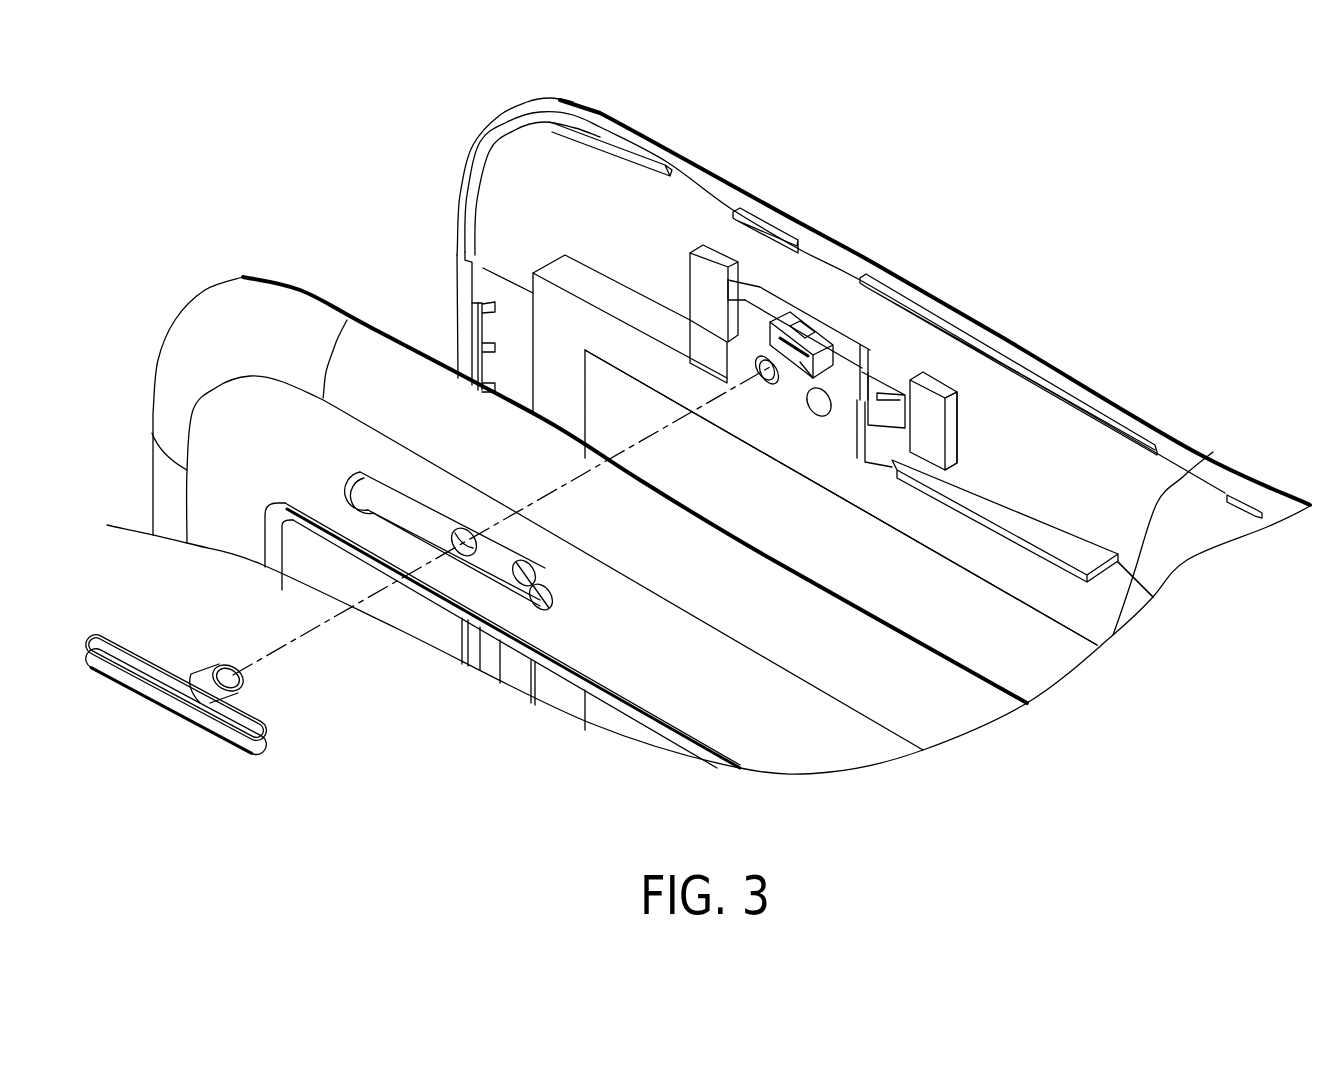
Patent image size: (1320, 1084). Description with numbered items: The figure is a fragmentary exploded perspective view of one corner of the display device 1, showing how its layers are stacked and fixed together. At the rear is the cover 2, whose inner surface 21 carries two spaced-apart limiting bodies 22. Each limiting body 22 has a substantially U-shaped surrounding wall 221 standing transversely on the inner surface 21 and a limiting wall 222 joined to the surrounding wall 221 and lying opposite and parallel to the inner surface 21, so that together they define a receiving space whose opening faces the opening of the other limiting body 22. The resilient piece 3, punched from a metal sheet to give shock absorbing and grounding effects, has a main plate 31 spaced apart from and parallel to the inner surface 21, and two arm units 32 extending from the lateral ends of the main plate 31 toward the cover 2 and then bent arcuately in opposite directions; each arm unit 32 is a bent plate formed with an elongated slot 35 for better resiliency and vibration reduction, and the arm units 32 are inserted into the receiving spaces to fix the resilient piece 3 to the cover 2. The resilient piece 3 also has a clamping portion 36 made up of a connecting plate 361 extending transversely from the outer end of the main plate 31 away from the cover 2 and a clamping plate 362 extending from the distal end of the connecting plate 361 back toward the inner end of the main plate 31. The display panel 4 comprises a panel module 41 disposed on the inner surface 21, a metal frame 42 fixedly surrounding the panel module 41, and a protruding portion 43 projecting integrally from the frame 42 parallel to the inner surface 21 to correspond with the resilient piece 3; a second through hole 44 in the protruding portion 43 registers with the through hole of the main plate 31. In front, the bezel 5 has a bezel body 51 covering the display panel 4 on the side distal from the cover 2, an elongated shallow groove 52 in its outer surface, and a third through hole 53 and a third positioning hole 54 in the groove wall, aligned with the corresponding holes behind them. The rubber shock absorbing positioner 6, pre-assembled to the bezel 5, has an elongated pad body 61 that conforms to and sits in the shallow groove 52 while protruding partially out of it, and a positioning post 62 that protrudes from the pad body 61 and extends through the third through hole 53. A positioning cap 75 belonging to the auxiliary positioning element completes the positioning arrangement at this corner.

The display device 1 is at (1190, 238).
The cover 2 is at (1193, 433).
The inner surface 21 is at (1160, 508).
The limiting bodies 22 is at (707, 275).
The surrounding wall 221 is at (953, 423).
The limiting wall 222 is at (927, 433).
The resilient piece 3 is at (838, 330).
The main plate 31 is at (862, 365).
The arm units 32 is at (735, 325).
The elongated slot 35 is at (905, 378).
The clamping portion 36 is at (793, 373).
The connecting plate 361 is at (797, 323).
The clamping plate 362 is at (800, 362).
The display panel 4 is at (540, 253).
The panel module 41 is at (1030, 657).
The frame 42 is at (1097, 618).
The protruding portion 43 is at (730, 343).
The second through hole 44 is at (760, 373).
The bezel 5 is at (168, 298).
The bezel body 51 is at (283, 400).
The shallow groove 52 is at (410, 517).
The third through hole 53 is at (457, 555).
The third positioning hole 54 is at (520, 590).
The shock absorbing positioner 6 is at (198, 743).
The pad body 61 is at (200, 720).
The positioning post 62 is at (240, 687).
The positioning cap 75 is at (822, 413).